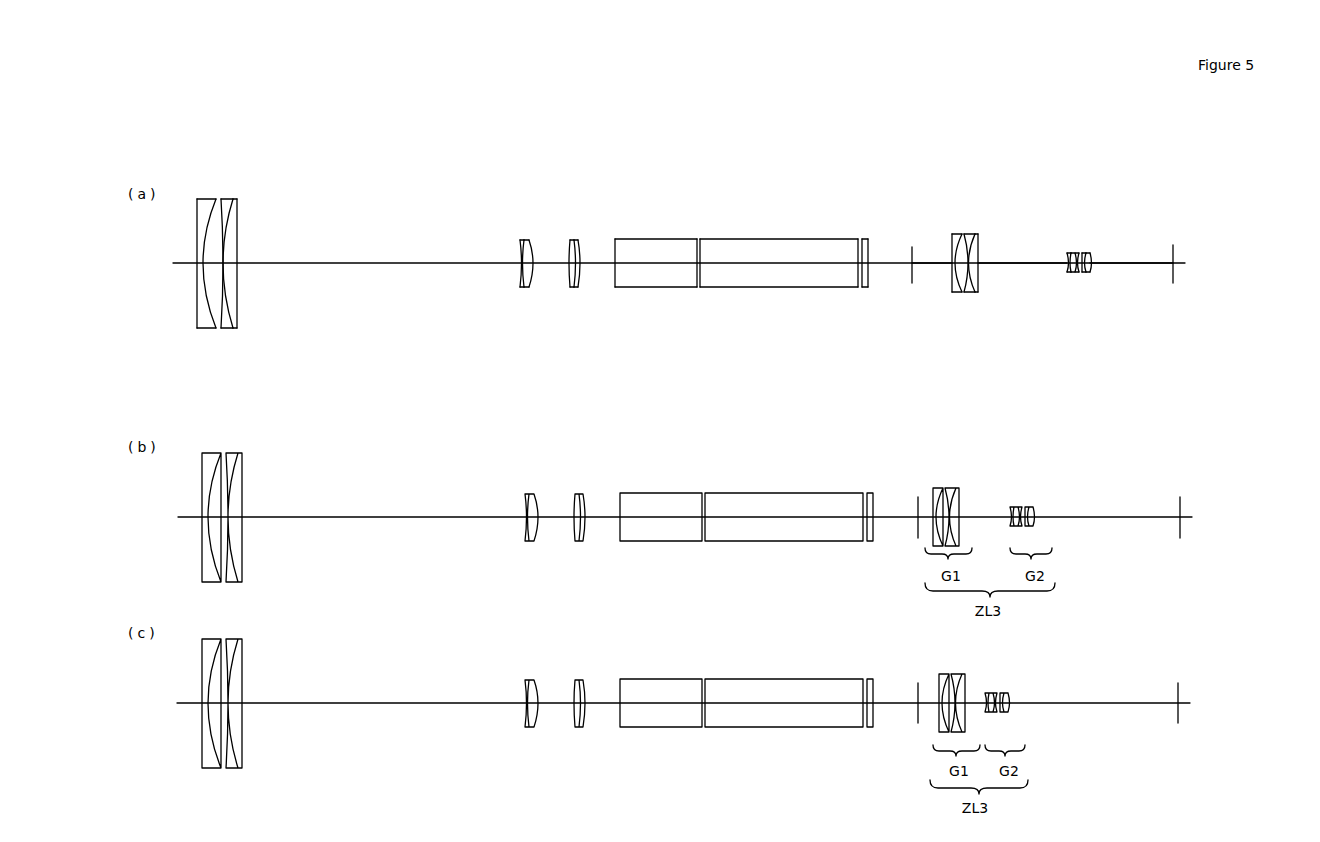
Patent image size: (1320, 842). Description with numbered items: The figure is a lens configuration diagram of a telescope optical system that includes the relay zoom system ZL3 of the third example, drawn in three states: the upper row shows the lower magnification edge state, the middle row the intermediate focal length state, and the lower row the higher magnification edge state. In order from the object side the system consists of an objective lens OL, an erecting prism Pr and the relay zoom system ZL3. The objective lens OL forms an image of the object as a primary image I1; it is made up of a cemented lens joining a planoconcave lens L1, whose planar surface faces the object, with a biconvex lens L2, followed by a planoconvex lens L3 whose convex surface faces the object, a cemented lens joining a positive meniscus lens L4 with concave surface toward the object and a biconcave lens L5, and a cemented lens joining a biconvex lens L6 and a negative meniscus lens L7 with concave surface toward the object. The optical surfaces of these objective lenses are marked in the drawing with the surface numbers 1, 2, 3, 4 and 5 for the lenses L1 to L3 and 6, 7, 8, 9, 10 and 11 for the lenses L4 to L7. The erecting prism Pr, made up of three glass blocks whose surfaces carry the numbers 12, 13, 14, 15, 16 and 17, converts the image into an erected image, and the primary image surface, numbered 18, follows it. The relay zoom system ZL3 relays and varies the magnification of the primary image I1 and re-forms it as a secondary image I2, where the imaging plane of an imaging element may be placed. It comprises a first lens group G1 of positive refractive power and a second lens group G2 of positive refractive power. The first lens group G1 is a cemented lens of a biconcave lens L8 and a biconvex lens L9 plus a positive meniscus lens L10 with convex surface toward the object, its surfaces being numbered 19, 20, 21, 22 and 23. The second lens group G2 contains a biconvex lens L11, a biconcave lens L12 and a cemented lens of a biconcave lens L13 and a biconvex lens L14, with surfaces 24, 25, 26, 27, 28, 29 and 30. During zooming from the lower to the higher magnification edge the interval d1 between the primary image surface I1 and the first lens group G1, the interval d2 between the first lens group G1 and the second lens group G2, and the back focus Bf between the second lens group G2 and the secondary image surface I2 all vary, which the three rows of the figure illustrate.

The lens surface 1 is at (198, 328).
The lens surface 2 is at (212, 328).
The lens surface 3 is at (222, 328).
The lens surface 4 is at (233, 328).
The lens surface 5 is at (237, 328).
The lens surface 6 is at (520, 287).
The lens surface 7 is at (524, 287).
The lens surface 8 is at (530, 287).
The lens surface 9 is at (570, 287).
The lens surface 10 is at (575, 287).
The lens surface 11 is at (580, 287).
The secondary image surface 12 is at (615, 287).
The prism surface 13 is at (698, 287).
The prism surface 14 is at (700, 270).
The prism surface 15 is at (859, 287).
The plate surface 16 is at (863, 287).
The plate surface 17 is at (868, 287).
The intermediate image surface 18 is at (912, 283).
The lens surface 19 is at (952, 292).
The lens surface 20 is at (958, 292).
The lens surface 21 is at (966, 292).
The lens surface 22 is at (972, 292).
The lens surface 23 is at (978, 292).
The lens surface 24 is at (1067, 272).
The lens surface 25 is at (1071, 272).
The lens surface 26 is at (1075, 272).
The lens surface 27 is at (1079, 272).
The lens surface 28 is at (1082, 270).
The lens surface 29 is at (1086, 268).
The lens surface 30 is at (1090, 266).
The planoconcave lens L1 is at (203, 199).
The biconvex lens L2 is at (226, 199).
The planoconvex lens L3 is at (236, 199).
The positive meniscus lens L4 is at (521, 240).
The biconcave lens L5 is at (531, 240).
The biconvex lens L6 is at (572, 240).
The negative meniscus lens L7 is at (578, 240).
The biconcave lens L8 is at (957, 234).
The biconvex lens L9 is at (968, 234).
The positive meniscus lens L10 is at (977, 234).
The biconvex lens L11 is at (1069, 253).
The biconcave lens L12 is at (1075, 253).
The biconcave lens L13 is at (1083, 253).
The biconvex lens L14 is at (1088, 253).
The primary image I1 is at (912, 247).
The secondary image I2 is at (1173, 245).
The interval between primary image surface and first lens group d1 is at (935, 262).
The interval between first lens group and second lens group d2 is at (1020, 262).
The back focus Bf is at (1092, 263).
The first lens group G1 is at (950, 352).
The second lens group G2 is at (1063, 352).
The relay zoom system ZL3 is at (950, 385).
The objective lens OL is at (198, 383).
The erecting prism Pr is at (620, 383).